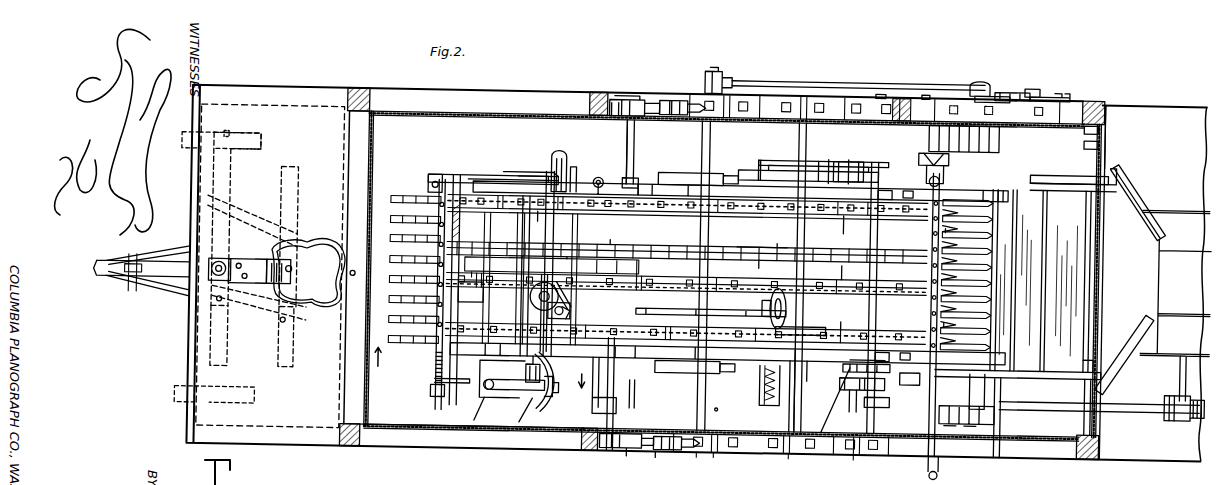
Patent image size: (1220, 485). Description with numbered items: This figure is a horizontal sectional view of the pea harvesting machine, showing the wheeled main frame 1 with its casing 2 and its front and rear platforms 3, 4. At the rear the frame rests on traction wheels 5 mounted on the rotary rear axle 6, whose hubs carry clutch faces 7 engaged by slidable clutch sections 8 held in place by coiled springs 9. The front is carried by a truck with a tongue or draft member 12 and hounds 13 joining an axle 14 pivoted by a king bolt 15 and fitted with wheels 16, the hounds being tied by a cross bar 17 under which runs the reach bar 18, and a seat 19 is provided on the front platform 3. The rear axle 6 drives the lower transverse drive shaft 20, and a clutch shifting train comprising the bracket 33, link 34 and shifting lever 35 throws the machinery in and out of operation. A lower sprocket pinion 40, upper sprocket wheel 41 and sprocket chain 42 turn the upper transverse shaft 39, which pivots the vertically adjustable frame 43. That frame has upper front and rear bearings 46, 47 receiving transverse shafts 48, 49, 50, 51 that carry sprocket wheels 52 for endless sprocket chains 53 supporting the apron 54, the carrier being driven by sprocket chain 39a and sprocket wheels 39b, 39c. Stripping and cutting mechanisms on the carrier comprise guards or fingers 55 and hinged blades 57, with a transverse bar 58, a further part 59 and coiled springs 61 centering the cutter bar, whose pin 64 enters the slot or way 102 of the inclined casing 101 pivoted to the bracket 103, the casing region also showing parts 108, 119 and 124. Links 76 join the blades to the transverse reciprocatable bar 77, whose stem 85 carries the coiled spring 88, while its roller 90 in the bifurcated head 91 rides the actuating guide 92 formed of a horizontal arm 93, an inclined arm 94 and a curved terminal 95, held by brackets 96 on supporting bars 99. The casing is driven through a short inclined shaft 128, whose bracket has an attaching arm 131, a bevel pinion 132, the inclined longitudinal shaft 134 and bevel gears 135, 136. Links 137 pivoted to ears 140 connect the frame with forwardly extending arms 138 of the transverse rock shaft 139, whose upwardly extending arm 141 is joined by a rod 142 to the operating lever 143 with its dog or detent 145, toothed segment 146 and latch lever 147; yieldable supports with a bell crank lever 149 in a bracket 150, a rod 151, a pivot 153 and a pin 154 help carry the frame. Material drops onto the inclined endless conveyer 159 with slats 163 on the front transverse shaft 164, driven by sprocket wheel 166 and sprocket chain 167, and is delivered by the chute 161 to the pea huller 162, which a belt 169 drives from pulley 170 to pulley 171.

The wheeled main frame 1 is at (395, 88).
The casing 2 is at (498, 108).
The front platform 3 is at (270, 266).
The rear platform 4 is at (1140, 120).
The traction wheels 5 is at (990, 125).
The rotary rear axle 6 is at (925, 85).
The clutch faces 7 is at (938, 146).
The slidable clutch sections 8 is at (940, 158).
The coiled springs 9 is at (940, 160).
The draw bar 12 is at (112, 277).
The hounds 13 is at (172, 250).
The axle 14 is at (232, 178).
The king bolt 15 is at (232, 240).
The wheels 16 is at (186, 140).
The cross bar 17 is at (290, 340).
The reach bar 18 is at (318, 305).
The seat 19 is at (322, 238).
The lower transverse drive shaft 20 is at (880, 85).
The bracket 33 is at (1060, 388).
The link 34 is at (995, 382).
The shifting lever 35 is at (950, 462).
The upper transverse shaft 39 is at (835, 176).
The sprocket chain 39a is at (531, 266).
The sprocket wheel 39b is at (842, 225).
The sprocket wheel 39c is at (754, 268).
The lower sprocket pinion 40 is at (845, 160).
The upper sprocket wheel 41 is at (770, 160).
The sprocket chain 42 is at (826, 160).
The vertically adjustable frame 43 is at (555, 183).
The upper front bearings 46 is at (638, 175).
The upper rear bearings 47 is at (900, 182).
The transverse shaft 48 is at (463, 221).
The transverse shaft 49 is at (613, 235).
The transverse shaft 50 is at (752, 237).
The transverse shaft 51 is at (883, 297).
The sprocket wheels 52 is at (686, 281).
The endless sprocket chains 53 is at (695, 302).
The apron 54 is at (445, 290).
The guards or fingers 55 is at (965, 236).
The hinged blades 57 is at (412, 214).
The transverse bar 58 is at (442, 392).
The finger 59 is at (958, 222).
The coiled springs 61 is at (770, 345).
The pin 64 is at (462, 380).
The links 76 is at (412, 194).
The transverse reciprocatable bar 77 is at (440, 352).
The stem 85 is at (440, 388).
The coiled spring 88 is at (440, 360).
The roller 90 is at (430, 172).
The bifurcated head 91 is at (432, 182).
The actuating guide 92 is at (450, 170).
The horizontal arm 93 is at (500, 170).
The inclined arm 94 is at (468, 170).
The terminal 95 is at (545, 155).
The brackets 96 is at (575, 162).
The supporting bars 99 is at (566, 152).
The inclined casing 101 is at (520, 438).
The longitudinal slot or way 102 is at (512, 392).
The bracket 103 is at (472, 414).
The link 108 is at (527, 416).
The link 119 is at (560, 406).
The lever 124 is at (530, 372).
The short inclined shaft 128 is at (567, 317).
The attaching arm 131 is at (540, 282).
The bevel pinion 132 is at (600, 352).
The inclined longitudinal shaft 134 is at (711, 317).
The bevel gear 135 is at (790, 306).
The bevel gear 136 is at (800, 328).
The links 137 is at (660, 180).
The forwardly extending arms 138 is at (705, 165).
The transverse rock shaft 139 is at (760, 163).
The ears 140 is at (628, 148).
The upwardly extending arm 141 is at (722, 62).
The rod 142 is at (828, 70).
The operating lever 143 is at (1020, 78).
The dog or detent 145 is at (1030, 76).
The toothed segment 146 is at (1060, 80).
The latch lever 147 is at (980, 78).
The bell crank lever 149 is at (608, 95).
The bracket 150 is at (676, 92).
The rod 151 is at (688, 455).
The pivot 153 is at (625, 92).
The pin 154 is at (660, 96).
The inclined endless conveyer 159 is at (1035, 188).
The chute 161 is at (1112, 300).
The pea huller 162 is at (1174, 357).
The slats 163 is at (1045, 250).
The front transverse shaft 164 is at (830, 445).
The sprocket wheel 166 is at (845, 368).
The sprocket chain 167 is at (848, 358).
The belt 169 is at (1132, 395).
The pulley 170 is at (855, 385).
The pulley 171 is at (1175, 410).